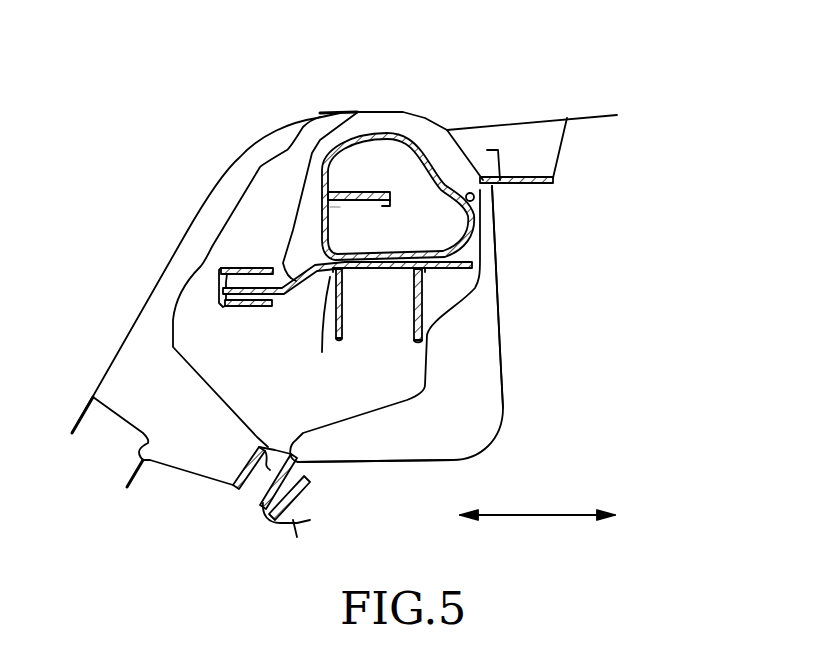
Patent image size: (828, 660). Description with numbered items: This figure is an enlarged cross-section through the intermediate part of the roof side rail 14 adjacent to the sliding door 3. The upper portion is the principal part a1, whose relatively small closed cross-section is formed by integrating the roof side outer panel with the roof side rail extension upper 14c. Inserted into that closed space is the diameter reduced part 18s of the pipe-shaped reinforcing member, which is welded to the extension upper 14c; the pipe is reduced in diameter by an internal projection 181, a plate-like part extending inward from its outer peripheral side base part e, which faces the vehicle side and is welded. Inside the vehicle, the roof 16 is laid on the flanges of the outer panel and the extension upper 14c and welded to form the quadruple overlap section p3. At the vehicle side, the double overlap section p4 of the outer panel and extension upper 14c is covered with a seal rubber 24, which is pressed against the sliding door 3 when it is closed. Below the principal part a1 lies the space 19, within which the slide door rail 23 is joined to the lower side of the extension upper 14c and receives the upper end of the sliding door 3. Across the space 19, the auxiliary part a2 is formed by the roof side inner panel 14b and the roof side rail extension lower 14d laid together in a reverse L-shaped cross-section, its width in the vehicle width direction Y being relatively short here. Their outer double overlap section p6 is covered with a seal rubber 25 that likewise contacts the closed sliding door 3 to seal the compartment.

The roof side rail 14 is at (352, 100).
The diameter reduced part 18s is at (432, 140).
The roof 16 is at (597, 120).
The quadruple overlap section p3 is at (538, 200).
The internal projection 181 is at (384, 201).
The outer peripheral side base part e is at (333, 203).
The sliding door 3 is at (101, 377).
The seal rubber 24 is at (244, 302).
The double overlap section p4 is at (285, 304).
The roof side rail extension upper 14c is at (332, 330).
The slide door rail 23 is at (413, 310).
The principal part a1 is at (445, 280).
The roof side inner panel 14b is at (500, 352).
The space 19 is at (320, 394).
The roof side rail extension lower 14d is at (400, 407).
The auxiliary part a2 is at (512, 408).
The double overlap section p6 is at (312, 450).
The vehicle width direction Y is at (565, 515).
The seal rubber 25 is at (298, 533).